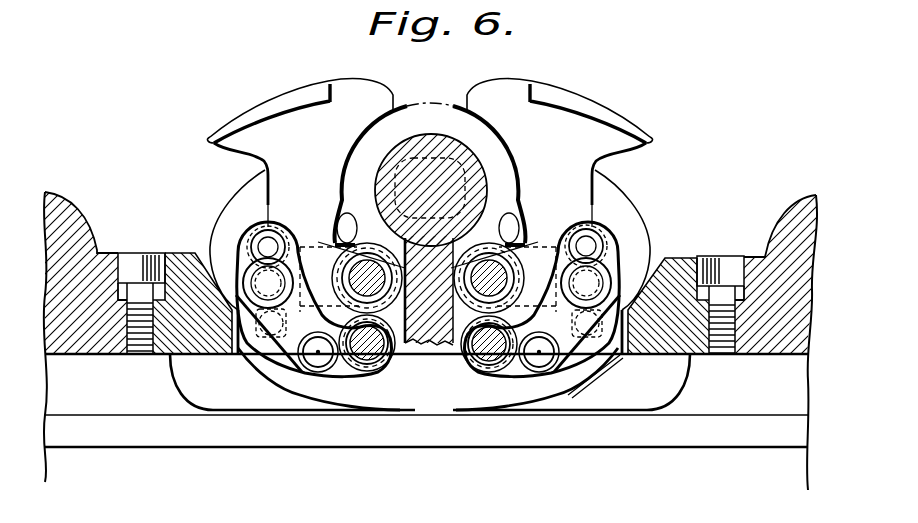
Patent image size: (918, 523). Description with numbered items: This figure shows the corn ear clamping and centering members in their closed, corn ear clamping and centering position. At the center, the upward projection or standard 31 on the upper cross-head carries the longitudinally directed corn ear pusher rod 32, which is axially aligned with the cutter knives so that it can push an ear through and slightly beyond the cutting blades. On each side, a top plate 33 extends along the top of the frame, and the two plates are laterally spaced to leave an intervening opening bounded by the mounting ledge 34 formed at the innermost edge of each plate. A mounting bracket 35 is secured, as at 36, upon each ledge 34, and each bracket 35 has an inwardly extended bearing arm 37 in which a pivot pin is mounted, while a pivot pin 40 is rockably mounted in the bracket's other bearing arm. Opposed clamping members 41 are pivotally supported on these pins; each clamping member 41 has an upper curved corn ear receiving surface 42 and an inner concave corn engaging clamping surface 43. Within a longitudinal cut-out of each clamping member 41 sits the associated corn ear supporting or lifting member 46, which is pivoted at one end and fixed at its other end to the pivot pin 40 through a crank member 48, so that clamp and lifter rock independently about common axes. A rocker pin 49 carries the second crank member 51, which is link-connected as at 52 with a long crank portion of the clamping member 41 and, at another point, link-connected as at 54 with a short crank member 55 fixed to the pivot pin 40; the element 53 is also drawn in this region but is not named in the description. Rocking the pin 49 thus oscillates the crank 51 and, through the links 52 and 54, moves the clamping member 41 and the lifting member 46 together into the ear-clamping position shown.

The central standard 31 is at (436, 345).
The corn ear pusher rod 32 is at (483, 161).
The top plate 33 is at (58, 203).
The mounting ledge 34 is at (120, 350).
The mounting bracket 35 is at (183, 258).
The securing means 36 is at (135, 258).
The bearing arm 37 is at (430, 382).
The pivot pin 40 is at (385, 373).
The corn ear clamping member 41 is at (300, 117).
The upper curved corn ear receiving surface 42 is at (242, 107).
The inner concave corn engaging clamping surface 43 is at (355, 145).
The corn ear supporting or lifting member 46 is at (342, 212).
The crank member 48 is at (444, 261).
The rocker pin 49 is at (337, 250).
The second crank member 51 is at (268, 218).
The link 52 is at (593, 340).
The link 53 is at (282, 357).
The link 54 is at (290, 295).
The short crank member 55 is at (353, 363).